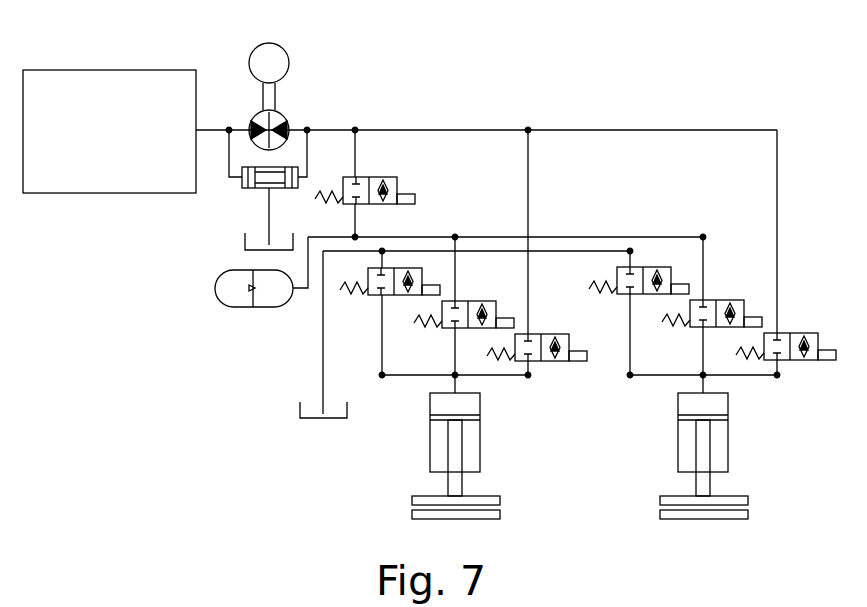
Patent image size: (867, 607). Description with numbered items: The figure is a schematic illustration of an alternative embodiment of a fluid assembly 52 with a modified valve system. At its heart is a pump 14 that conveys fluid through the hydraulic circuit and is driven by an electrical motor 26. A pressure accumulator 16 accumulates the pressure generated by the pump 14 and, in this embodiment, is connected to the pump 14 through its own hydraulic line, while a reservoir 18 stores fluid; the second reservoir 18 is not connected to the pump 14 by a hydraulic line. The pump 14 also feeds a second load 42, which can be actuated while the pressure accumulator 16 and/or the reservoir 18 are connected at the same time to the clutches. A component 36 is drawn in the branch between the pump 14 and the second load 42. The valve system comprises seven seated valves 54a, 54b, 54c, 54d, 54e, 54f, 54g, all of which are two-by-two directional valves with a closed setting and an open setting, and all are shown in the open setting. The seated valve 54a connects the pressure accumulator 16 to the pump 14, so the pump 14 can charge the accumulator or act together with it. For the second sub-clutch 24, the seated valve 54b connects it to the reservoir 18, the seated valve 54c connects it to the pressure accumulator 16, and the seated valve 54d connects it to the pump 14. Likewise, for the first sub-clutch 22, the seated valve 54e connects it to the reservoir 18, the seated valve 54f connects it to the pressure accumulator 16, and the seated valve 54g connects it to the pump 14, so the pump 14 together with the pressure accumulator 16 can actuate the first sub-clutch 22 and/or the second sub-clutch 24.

The pump 14 is at (288, 121).
The pressure accumulator 16 is at (262, 307).
The reservoir 18 is at (243, 240).
The first sub-clutch 22 is at (654, 393).
The second sub-clutch 24 is at (406, 393).
The electrical motor 26 is at (284, 48).
The pressure relief / control valve 36 is at (245, 190).
The second load 42 is at (108, 193).
The fluid assembly 52 is at (178, 372).
The seated valve 54a is at (397, 186).
The seated valve 54b is at (422, 270).
The seated valve 54c is at (487, 301).
The seated valve 54d is at (548, 362).
The seated valve 54e is at (650, 267).
The seated valve 54f is at (722, 300).
The seated valve 54g is at (797, 333).